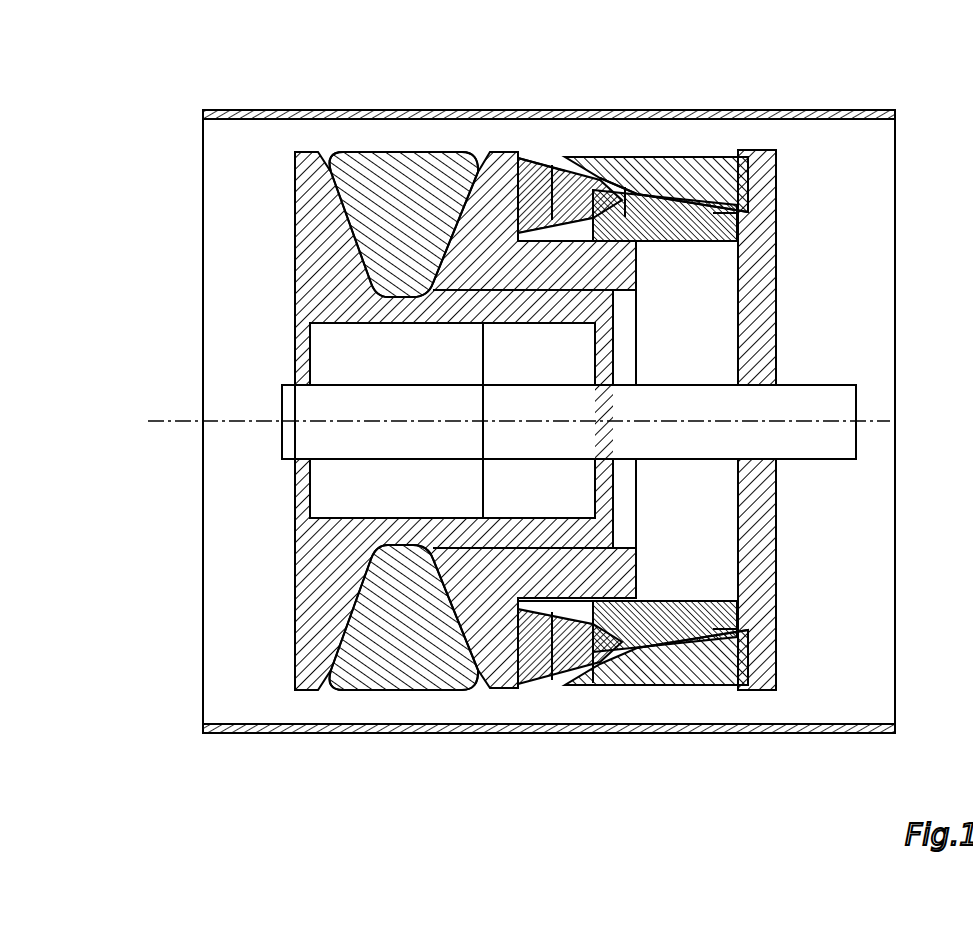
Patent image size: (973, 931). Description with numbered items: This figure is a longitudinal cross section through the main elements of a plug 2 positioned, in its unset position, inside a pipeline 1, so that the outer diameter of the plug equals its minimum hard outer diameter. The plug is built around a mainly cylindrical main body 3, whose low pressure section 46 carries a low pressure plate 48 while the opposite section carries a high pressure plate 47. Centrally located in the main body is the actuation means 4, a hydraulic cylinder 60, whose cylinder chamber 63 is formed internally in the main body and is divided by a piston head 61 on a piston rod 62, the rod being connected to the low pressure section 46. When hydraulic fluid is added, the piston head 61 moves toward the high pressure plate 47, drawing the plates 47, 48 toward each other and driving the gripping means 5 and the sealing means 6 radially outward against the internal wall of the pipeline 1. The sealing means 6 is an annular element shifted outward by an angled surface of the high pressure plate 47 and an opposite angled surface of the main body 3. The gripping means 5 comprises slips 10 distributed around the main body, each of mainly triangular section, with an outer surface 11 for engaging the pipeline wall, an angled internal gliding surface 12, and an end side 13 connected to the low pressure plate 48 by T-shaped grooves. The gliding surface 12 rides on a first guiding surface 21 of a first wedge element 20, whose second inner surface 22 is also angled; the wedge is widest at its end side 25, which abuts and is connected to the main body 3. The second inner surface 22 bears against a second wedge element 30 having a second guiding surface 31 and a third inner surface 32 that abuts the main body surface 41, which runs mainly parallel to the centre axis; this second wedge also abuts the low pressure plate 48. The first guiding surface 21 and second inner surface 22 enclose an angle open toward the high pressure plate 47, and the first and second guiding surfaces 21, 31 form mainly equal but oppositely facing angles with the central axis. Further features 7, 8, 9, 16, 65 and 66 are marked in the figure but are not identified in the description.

The pipeline 1 is at (262, 736).
The plug 2 is at (240, 279).
The main body 3 is at (500, 248).
The actuation means 4 is at (347, 478).
The gripping means 5 is at (663, 137).
The sealing means 6 is at (398, 192).
The axis of rotation 7 is at (192, 421).
The first chamber 8 is at (261, 357).
The second chamber 9 is at (825, 347).
The slip element 10 is at (720, 658).
The outer surface 11 is at (695, 653).
The internal gliding surface 12 is at (650, 653).
The end side 13 is at (762, 687).
The outer ring surface 16 is at (710, 180).
The first wedge element 20 is at (537, 680).
The first guiding surface 21 is at (552, 682).
The second inner surface 22 is at (592, 683).
The end side 25 is at (492, 682).
The second wedge element 30 is at (718, 598).
The second guiding surface 31 is at (705, 610).
The third inner surface 32 is at (675, 597).
The main body surface 41 is at (636, 572).
The low pressure section 46 is at (763, 362).
The high pressure plate 47 is at (305, 188).
The low pressure plate 48 is at (752, 148).
The main hydraulic cylinder 60 is at (348, 352).
The piston head 61 is at (513, 487).
The piston rod 62 is at (313, 433).
The cylinder chamber 63 is at (446, 497).
The shaft end 65 is at (280, 408).
The shaft end 66 is at (857, 410).